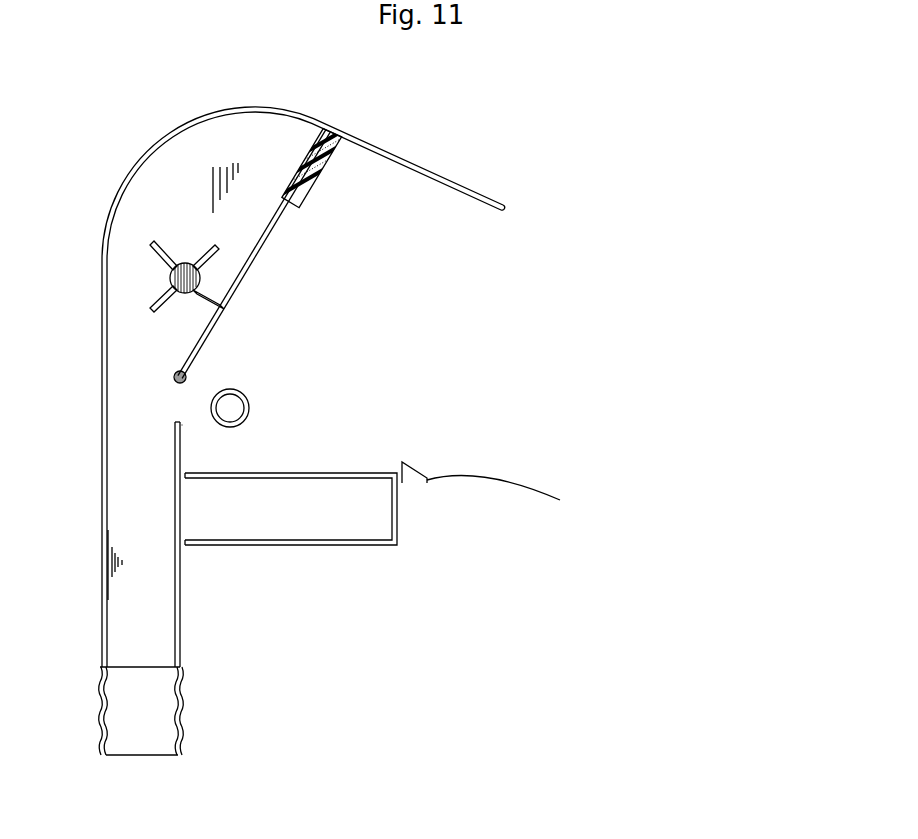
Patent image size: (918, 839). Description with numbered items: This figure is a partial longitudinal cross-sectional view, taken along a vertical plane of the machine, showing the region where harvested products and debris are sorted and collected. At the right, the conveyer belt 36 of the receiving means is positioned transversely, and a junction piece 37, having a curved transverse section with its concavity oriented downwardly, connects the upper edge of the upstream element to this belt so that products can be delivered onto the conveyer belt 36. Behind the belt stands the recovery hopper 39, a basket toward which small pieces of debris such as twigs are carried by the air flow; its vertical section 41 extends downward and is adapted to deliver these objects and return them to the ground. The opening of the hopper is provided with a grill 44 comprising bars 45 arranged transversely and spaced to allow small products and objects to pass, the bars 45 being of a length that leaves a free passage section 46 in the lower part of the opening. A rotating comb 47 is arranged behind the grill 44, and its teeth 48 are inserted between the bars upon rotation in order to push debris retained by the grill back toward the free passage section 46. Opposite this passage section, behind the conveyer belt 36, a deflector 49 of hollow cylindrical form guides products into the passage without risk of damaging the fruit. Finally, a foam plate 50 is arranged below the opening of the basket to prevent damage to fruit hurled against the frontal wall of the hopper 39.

The conveyer belt 36 is at (363, 473).
The junction piece 37 is at (552, 494).
The recovery hopper 39 is at (103, 113).
The vertical section 41 is at (152, 612).
The grill 44 is at (250, 311).
The bars 45 is at (252, 267).
The free passage section 46 is at (180, 405).
The rotating comb 47 is at (179, 313).
The teeth 48 is at (206, 248).
The deflector 49 is at (249, 406).
The foam plate 50 is at (330, 180).